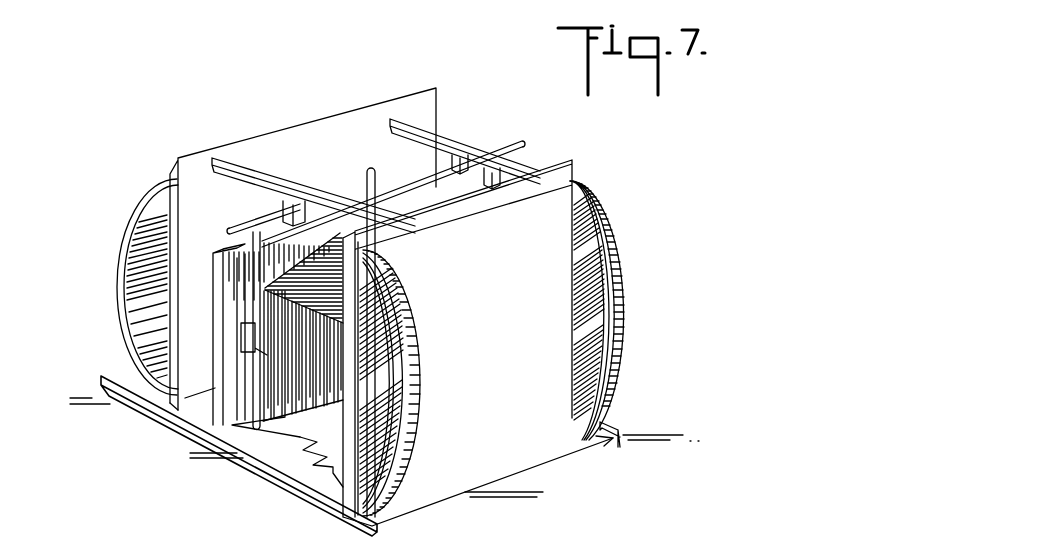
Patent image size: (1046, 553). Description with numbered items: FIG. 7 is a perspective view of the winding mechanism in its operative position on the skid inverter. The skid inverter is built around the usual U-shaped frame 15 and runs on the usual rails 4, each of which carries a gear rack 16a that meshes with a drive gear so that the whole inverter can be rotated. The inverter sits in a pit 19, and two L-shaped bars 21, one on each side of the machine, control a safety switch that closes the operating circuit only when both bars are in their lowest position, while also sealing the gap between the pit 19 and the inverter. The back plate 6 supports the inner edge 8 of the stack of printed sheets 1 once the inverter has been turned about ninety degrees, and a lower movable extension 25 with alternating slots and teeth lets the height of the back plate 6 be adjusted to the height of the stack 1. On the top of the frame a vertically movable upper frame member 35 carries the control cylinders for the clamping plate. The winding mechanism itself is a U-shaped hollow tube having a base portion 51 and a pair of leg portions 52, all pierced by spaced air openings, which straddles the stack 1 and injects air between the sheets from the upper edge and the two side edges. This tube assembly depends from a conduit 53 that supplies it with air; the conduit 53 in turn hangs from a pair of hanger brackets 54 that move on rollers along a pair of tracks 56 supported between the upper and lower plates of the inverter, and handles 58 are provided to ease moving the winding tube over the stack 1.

The stack of printed sheets 1 is at (275, 385).
The rails 4 is at (612, 305).
The back plate 6 is at (277, 433).
The inner edge 8 is at (207, 277).
The U-shaped frame 15 is at (324, 131).
The gear rack 16a is at (625, 355).
The pit 19 is at (603, 442).
The bars 21 is at (285, 477).
The lower movable extension 25 is at (333, 472).
The upper frame member 35 is at (233, 400).
The base portion 51 is at (247, 242).
The leg portions 52 is at (257, 273).
The conduit 53 is at (363, 185).
The hanger brackets 54 is at (282, 198).
The tracks 56 is at (243, 166).
The handles 58 is at (239, 338).